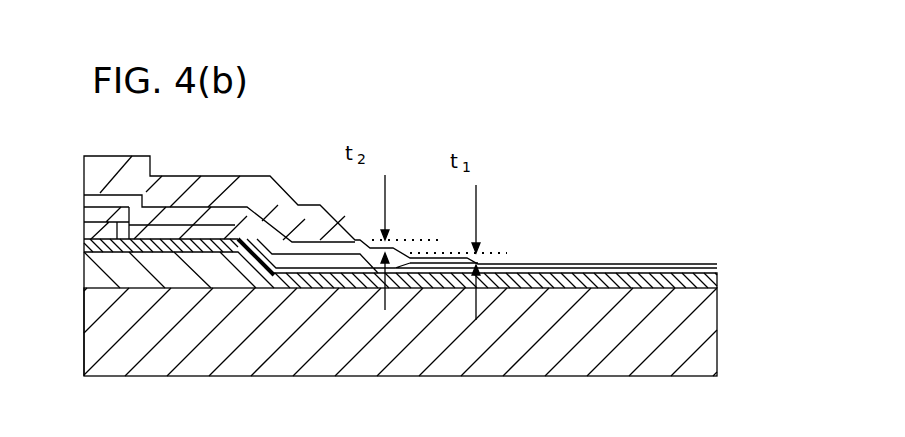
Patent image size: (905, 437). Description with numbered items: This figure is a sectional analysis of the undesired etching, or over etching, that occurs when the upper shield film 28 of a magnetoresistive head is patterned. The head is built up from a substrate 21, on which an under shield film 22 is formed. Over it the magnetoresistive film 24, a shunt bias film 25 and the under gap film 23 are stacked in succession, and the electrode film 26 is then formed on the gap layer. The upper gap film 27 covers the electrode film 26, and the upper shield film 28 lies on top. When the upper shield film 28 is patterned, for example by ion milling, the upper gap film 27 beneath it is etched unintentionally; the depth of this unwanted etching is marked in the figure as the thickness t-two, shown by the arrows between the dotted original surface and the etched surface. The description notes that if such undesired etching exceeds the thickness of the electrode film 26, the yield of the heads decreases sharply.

The substrate 21 is at (708, 360).
The under shield film 22 is at (84, 256).
The under gap film 23 is at (718, 277).
The magnetoresistive film 24 is at (84, 241).
The shunt bias film 25 is at (84, 228).
The electrode film 26 is at (718, 264).
The upper gap film 27 is at (84, 198).
The upper shield film 28 is at (163, 192).